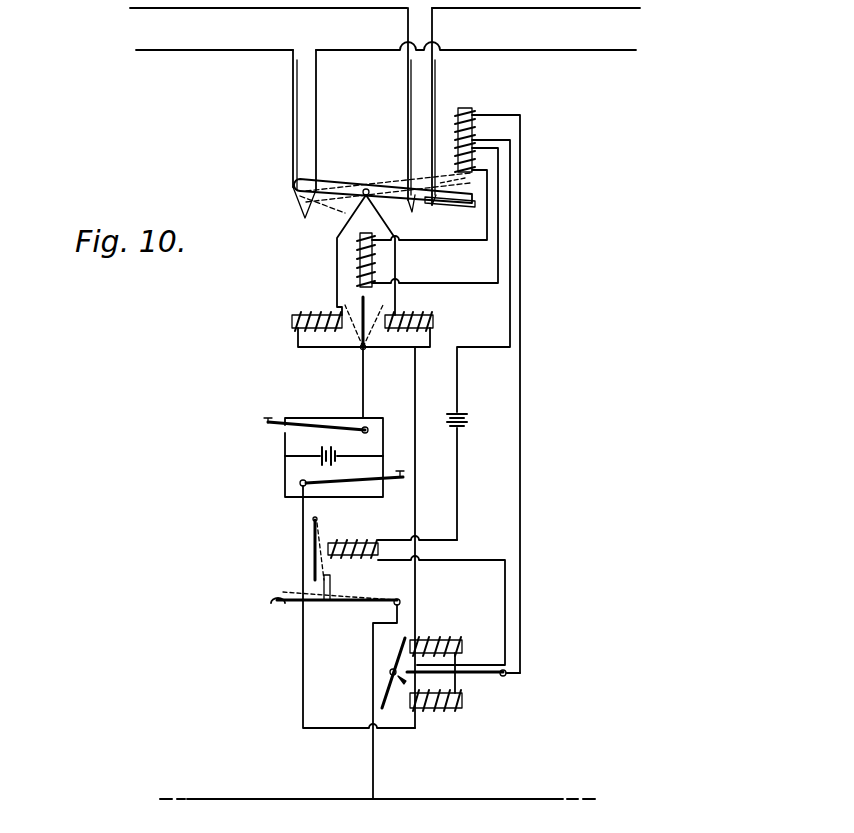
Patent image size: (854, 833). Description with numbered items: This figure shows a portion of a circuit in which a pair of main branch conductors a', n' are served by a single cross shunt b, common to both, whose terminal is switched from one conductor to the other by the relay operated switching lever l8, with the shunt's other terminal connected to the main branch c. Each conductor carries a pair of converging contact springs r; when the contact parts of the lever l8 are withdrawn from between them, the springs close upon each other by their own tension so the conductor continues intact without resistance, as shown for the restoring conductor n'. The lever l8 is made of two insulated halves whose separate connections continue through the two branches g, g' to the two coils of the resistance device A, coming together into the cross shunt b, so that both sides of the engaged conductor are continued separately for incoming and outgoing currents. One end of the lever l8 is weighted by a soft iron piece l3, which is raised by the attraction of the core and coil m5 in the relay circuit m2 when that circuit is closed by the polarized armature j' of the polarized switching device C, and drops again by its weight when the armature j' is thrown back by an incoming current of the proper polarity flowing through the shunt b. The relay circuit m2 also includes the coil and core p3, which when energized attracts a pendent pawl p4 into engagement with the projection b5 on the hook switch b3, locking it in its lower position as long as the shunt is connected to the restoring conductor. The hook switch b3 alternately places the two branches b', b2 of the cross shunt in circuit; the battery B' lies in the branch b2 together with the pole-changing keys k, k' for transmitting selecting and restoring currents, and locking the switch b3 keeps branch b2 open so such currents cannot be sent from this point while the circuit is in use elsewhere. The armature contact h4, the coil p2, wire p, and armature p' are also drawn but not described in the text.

The main branch conductor a' is at (385, 23).
The main branch conductor n' is at (386, 59).
The contact springs r is at (412, 148).
The relay operated switching lever l8 is at (383, 185).
The soft iron piece l3 is at (450, 214).
The armature p' is at (452, 151).
The relay circuit m2 is at (458, 398).
The core and coil m5 is at (474, 130).
The magnet coil p2 is at (366, 255).
The circuit wire p is at (422, 266).
The branch g' is at (319, 275).
The resistance device A is at (323, 312).
The branch g is at (365, 318).
The branch of cross shunt b' is at (341, 537).
The branch of cross shunt b2 is at (363, 410).
The pole-changing key k is at (310, 453).
The battery B' is at (393, 477).
The pole-changing key k' is at (355, 473).
The coil and core p3 is at (416, 600).
The pendent pawl p4 is at (313, 552).
The hook switch b3 is at (338, 695).
The projection b5 is at (277, 601).
The polarized switching device C is at (458, 683).
The polarized armature j' is at (448, 673).
The contact h4 is at (386, 682).
The cross shunt b is at (383, 765).
The main branch c is at (377, 788).